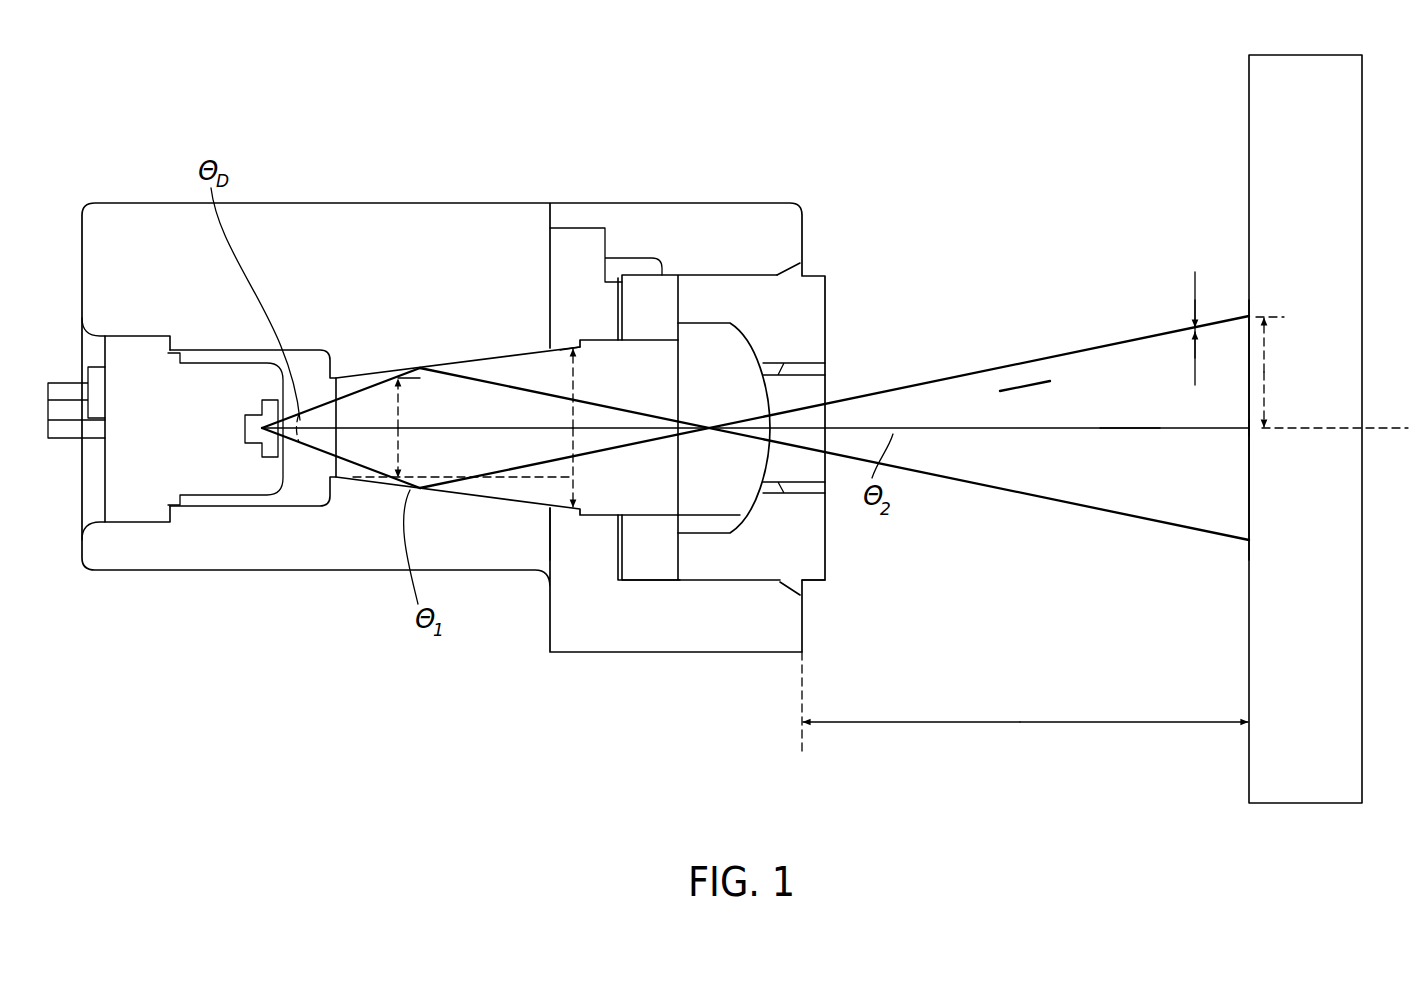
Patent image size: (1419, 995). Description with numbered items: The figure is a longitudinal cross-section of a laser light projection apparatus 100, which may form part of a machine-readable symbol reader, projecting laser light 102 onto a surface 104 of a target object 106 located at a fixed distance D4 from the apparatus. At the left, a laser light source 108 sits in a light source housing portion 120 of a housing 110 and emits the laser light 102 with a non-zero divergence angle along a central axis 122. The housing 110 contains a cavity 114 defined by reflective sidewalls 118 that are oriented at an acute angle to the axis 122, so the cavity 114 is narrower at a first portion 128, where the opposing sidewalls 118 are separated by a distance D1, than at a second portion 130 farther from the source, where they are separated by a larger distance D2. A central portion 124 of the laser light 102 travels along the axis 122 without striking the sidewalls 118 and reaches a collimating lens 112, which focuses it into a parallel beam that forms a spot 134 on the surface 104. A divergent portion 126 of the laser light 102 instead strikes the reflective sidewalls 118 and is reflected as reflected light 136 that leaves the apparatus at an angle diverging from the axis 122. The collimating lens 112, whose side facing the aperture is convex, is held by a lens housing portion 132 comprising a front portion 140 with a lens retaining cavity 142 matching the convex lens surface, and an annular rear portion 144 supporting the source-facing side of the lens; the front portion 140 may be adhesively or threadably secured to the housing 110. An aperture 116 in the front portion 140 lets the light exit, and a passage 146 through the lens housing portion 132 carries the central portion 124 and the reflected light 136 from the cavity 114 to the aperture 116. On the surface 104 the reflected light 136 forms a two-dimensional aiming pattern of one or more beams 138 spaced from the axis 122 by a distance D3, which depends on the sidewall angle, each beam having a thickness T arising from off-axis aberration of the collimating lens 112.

The laser light projection apparatus 100 is at (284, 53).
The laser light 102 is at (1070, 520).
The surface 104 is at (1248, 573).
The target object 106 is at (1238, 787).
The laser light source 108 is at (222, 470).
The housing 110 is at (480, 578).
The collimating lens 112 is at (737, 348).
The cavity 114 is at (472, 406).
The aperture 116 is at (796, 400).
The sidewalls 118 is at (377, 473).
The light source housing portion 120 is at (297, 492).
The central axis 122 is at (1385, 432).
The central portion 124 is at (1135, 427).
The divergent portion 126 is at (356, 380).
The first portion 128 is at (398, 376).
The second portion 130 is at (573, 346).
The lens housing portion 132 is at (836, 320).
The spot 134 is at (1250, 430).
The reflected light 136 is at (557, 447).
The beams 138 is at (1022, 362).
The front portion 140 is at (757, 553).
The lens retaining cavity 142 is at (746, 526).
The rear portion 144 is at (650, 562).
The passage 146 is at (651, 502).
The distance between opposing sidewalls at first portion D1 is at (396, 414).
The distance between opposing sidewalls at second portion D2 is at (575, 422).
The distance of beams from axis D3 is at (1263, 377).
The fixed distance D4 is at (1030, 726).
The thickness T is at (1196, 293).